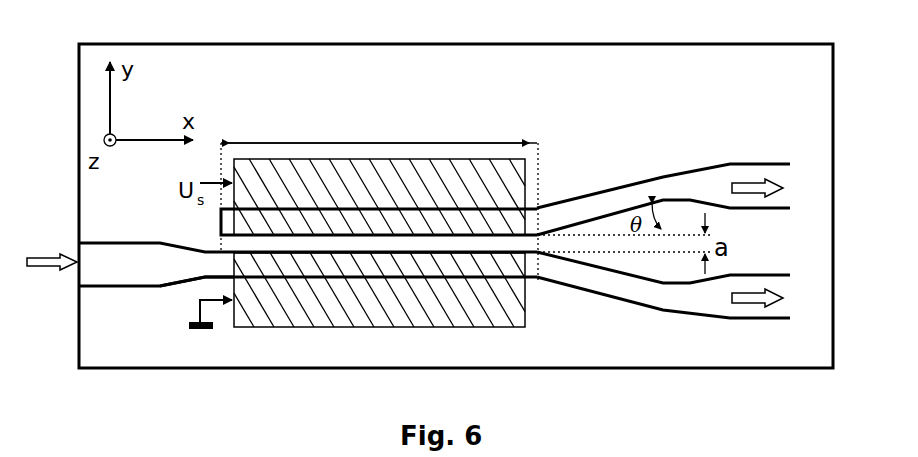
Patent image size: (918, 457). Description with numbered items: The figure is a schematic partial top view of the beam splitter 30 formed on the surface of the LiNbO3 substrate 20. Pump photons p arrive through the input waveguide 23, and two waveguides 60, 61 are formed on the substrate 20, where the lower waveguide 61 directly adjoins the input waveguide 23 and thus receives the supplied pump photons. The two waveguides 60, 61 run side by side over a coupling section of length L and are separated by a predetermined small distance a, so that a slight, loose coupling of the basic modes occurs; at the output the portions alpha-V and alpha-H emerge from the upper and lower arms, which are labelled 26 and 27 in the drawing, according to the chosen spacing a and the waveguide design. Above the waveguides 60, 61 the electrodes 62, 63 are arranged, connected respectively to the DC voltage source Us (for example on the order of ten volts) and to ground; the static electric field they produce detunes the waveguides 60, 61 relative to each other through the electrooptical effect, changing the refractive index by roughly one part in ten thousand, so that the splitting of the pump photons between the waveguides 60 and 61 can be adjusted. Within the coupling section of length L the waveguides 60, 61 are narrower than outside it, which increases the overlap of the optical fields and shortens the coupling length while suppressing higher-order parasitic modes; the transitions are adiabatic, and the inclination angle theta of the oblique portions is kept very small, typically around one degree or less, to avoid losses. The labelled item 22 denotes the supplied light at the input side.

The substrate 20 is at (160, 44).
The input light 22 is at (57, 262).
The input waveguide 23 is at (119, 251).
The upper output waveguide 26 is at (755, 164).
The lower output waveguide 27 is at (755, 318).
The beam splitter 30 is at (439, 126).
The upper waveguide 60 is at (221, 221).
The lower waveguide 61 is at (168, 285).
The electrode 62 is at (523, 170).
The electrode 63 is at (523, 316).